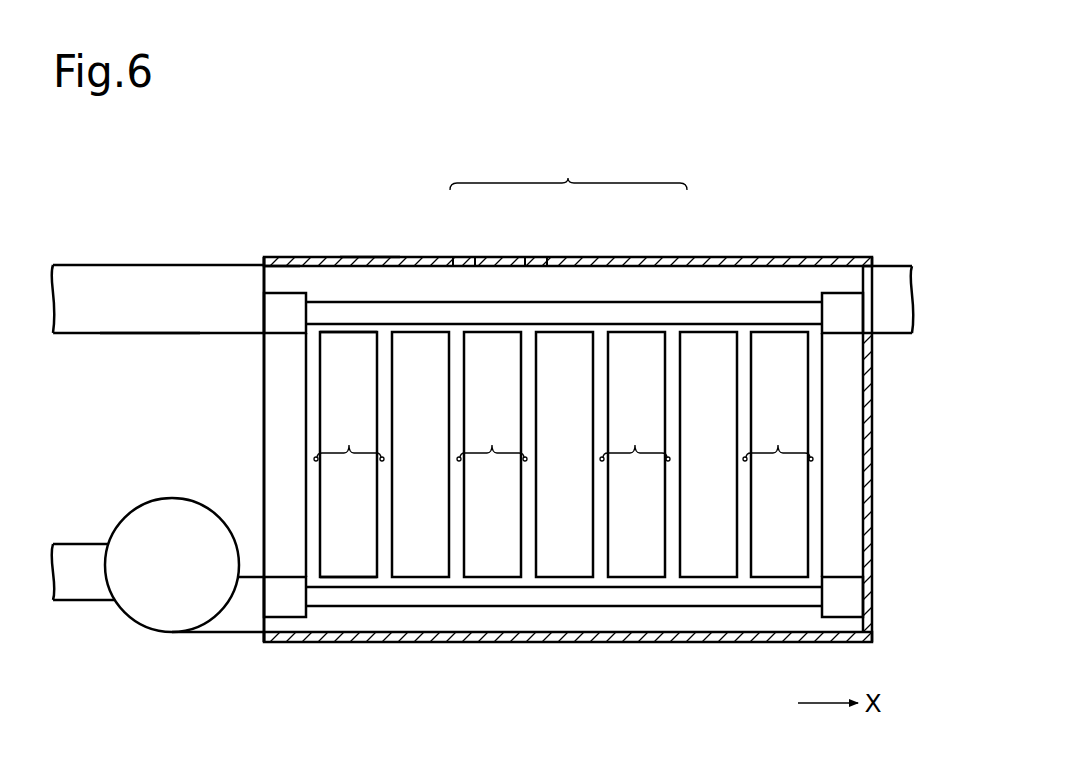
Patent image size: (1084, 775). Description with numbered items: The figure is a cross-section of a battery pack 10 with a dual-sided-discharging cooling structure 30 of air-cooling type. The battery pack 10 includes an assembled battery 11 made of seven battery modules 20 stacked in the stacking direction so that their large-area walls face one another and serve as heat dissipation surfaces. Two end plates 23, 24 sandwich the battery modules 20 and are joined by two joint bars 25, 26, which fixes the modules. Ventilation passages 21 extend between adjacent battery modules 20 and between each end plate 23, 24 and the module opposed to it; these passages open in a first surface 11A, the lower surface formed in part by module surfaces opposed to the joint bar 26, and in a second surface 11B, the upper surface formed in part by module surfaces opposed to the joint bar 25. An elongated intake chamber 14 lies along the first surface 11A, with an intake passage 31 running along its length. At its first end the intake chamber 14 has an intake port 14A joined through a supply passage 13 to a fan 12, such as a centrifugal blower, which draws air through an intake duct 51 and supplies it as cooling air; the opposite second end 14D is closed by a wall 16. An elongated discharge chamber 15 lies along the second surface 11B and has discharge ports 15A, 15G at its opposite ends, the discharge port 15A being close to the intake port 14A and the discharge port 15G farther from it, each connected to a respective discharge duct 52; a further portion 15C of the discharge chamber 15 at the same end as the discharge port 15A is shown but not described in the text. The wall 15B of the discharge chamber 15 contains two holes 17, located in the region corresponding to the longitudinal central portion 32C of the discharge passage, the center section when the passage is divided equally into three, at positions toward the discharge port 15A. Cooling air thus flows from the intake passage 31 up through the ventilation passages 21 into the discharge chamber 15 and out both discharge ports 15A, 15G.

The battery pack 10 is at (180, 208).
The assembled battery 11 is at (823, 292).
The first surface 11A is at (348, 577).
The second surface 11B is at (345, 333).
The fan 12 is at (197, 500).
The supply passage 13 is at (240, 632).
The intake chamber 14 is at (725, 642).
The intake port 14A is at (265, 632).
The second end 14D is at (865, 595).
The discharge chamber 15 is at (650, 257).
The discharge port 15A is at (264, 277).
The wall 15B is at (365, 257).
The top plate opening portion 15C is at (264, 322).
The discharge port 15G is at (866, 280).
The wall 16 is at (866, 423).
The holes 17 is at (530, 258).
The battery modules 20 is at (407, 340).
The ventilation passages 21 is at (563, 437).
The end plate 23 is at (280, 373).
The end plate 24 is at (848, 378).
The joint bar 25 is at (443, 316).
The joint bar 26 is at (543, 597).
The cooling structure 30 is at (228, 310).
The intake passage 31 is at (630, 620).
The longitudinal central portion 32C is at (568, 167).
The intake duct 51 is at (75, 544).
The discharge ducts 52 is at (78, 265).